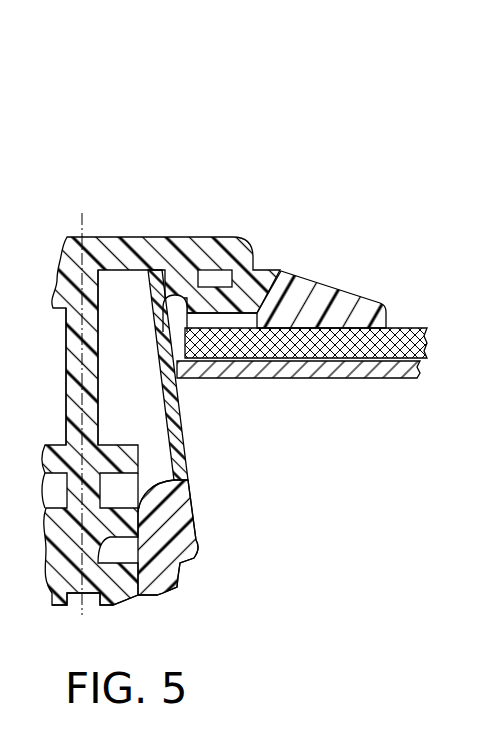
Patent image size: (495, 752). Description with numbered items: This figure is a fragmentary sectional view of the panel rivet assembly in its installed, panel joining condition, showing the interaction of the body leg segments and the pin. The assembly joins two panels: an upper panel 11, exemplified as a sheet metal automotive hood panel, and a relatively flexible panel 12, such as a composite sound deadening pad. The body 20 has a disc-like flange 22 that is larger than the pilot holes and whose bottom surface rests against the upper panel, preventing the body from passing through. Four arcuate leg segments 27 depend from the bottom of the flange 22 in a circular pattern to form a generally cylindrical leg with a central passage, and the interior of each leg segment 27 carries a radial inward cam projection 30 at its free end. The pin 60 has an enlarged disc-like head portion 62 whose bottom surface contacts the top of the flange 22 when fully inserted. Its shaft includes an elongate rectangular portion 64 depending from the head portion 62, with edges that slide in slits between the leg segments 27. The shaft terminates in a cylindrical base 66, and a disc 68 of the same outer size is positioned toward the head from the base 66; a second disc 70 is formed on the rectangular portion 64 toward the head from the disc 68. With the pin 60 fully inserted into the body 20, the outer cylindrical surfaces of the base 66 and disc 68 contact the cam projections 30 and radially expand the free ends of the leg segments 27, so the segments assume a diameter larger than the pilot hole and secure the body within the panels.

The panel 11 is at (315, 379).
The panel 12 is at (398, 326).
The body 20 is at (343, 260).
The disc-like flange 22 is at (330, 300).
The leg segments 27 is at (178, 446).
The cam projection 30 is at (160, 538).
The pin 60 is at (202, 392).
The head portion 62 is at (237, 248).
The rectangular portion 64 is at (93, 407).
The cylindrical base 66 is at (133, 594).
The disc 68 is at (208, 529).
The second disc 70 is at (168, 488).